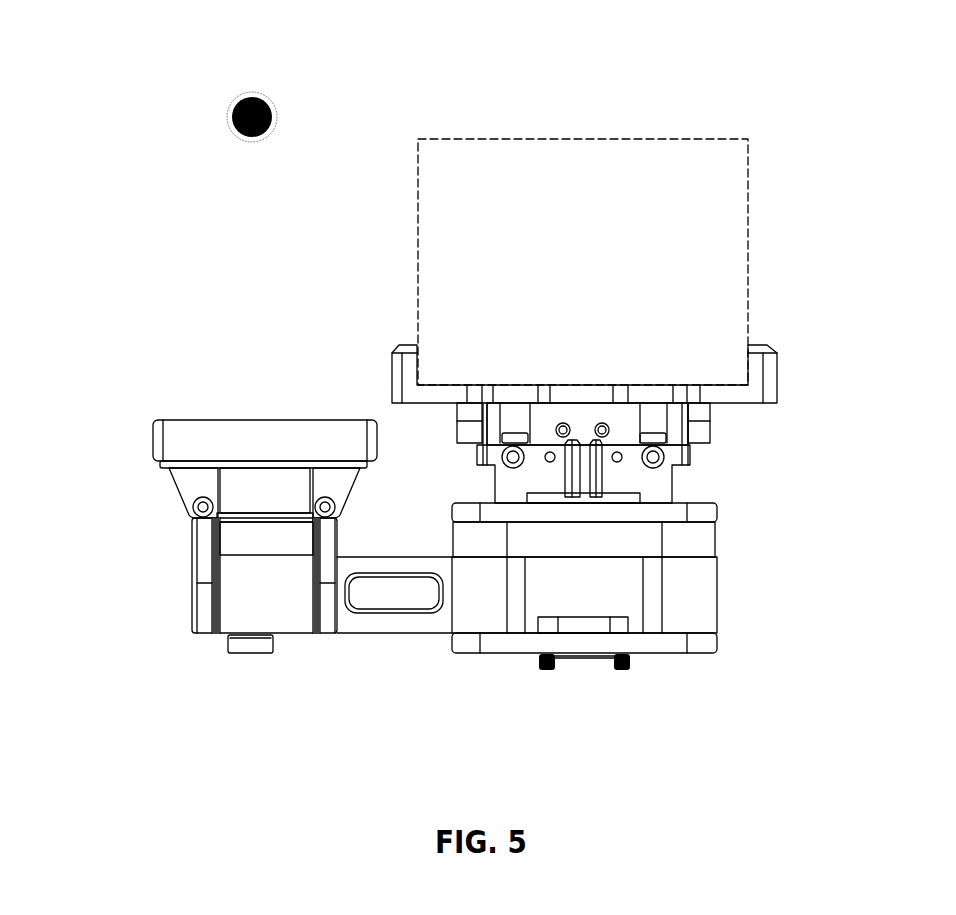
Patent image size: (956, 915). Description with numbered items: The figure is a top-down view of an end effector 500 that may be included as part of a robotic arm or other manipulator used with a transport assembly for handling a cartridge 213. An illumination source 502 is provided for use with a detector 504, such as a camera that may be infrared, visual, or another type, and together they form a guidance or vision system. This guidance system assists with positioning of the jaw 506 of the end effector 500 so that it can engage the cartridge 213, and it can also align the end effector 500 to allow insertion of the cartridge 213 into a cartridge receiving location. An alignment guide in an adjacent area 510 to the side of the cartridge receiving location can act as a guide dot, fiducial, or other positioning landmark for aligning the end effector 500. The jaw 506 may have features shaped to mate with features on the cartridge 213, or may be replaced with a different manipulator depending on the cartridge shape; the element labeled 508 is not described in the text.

The end effector 500 is at (90, 122).
The adjacent area 510 is at (278, 108).
The cartridge 213 is at (720, 167).
The jaw 506 is at (772, 388).
The illumination source 502 is at (180, 428).
The detector 504 is at (240, 605).
The actuator 508 is at (693, 540).